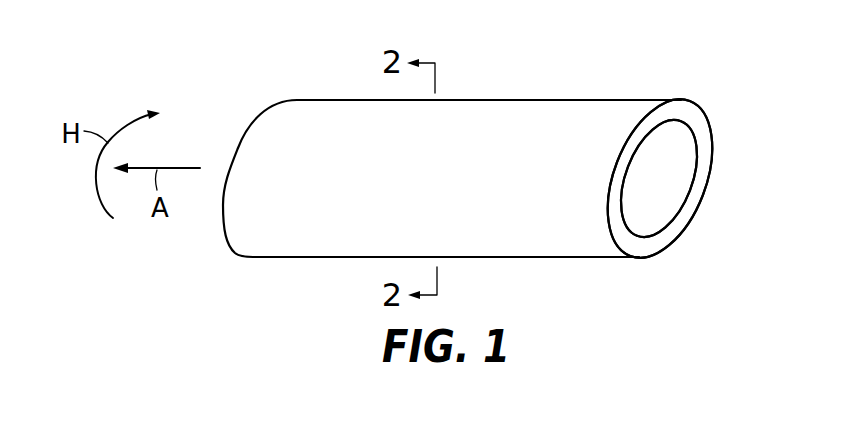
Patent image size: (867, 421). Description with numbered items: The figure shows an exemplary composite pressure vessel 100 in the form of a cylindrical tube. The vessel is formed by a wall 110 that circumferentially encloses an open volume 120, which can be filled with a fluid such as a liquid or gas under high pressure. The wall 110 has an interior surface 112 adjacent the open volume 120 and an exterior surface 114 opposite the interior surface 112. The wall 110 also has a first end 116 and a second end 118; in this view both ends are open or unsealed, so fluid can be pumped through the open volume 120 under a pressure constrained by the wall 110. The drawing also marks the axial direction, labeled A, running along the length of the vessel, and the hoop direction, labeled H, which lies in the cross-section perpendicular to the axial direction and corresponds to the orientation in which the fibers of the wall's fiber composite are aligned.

The pressure vessel 100 is at (492, 149).
The wall 110 is at (552, 112).
The interior surface 112 is at (667, 208).
The exterior surface 114 is at (668, 247).
The first end 116 is at (238, 145).
The second end 118 is at (698, 118).
The open volume 120 is at (668, 168).